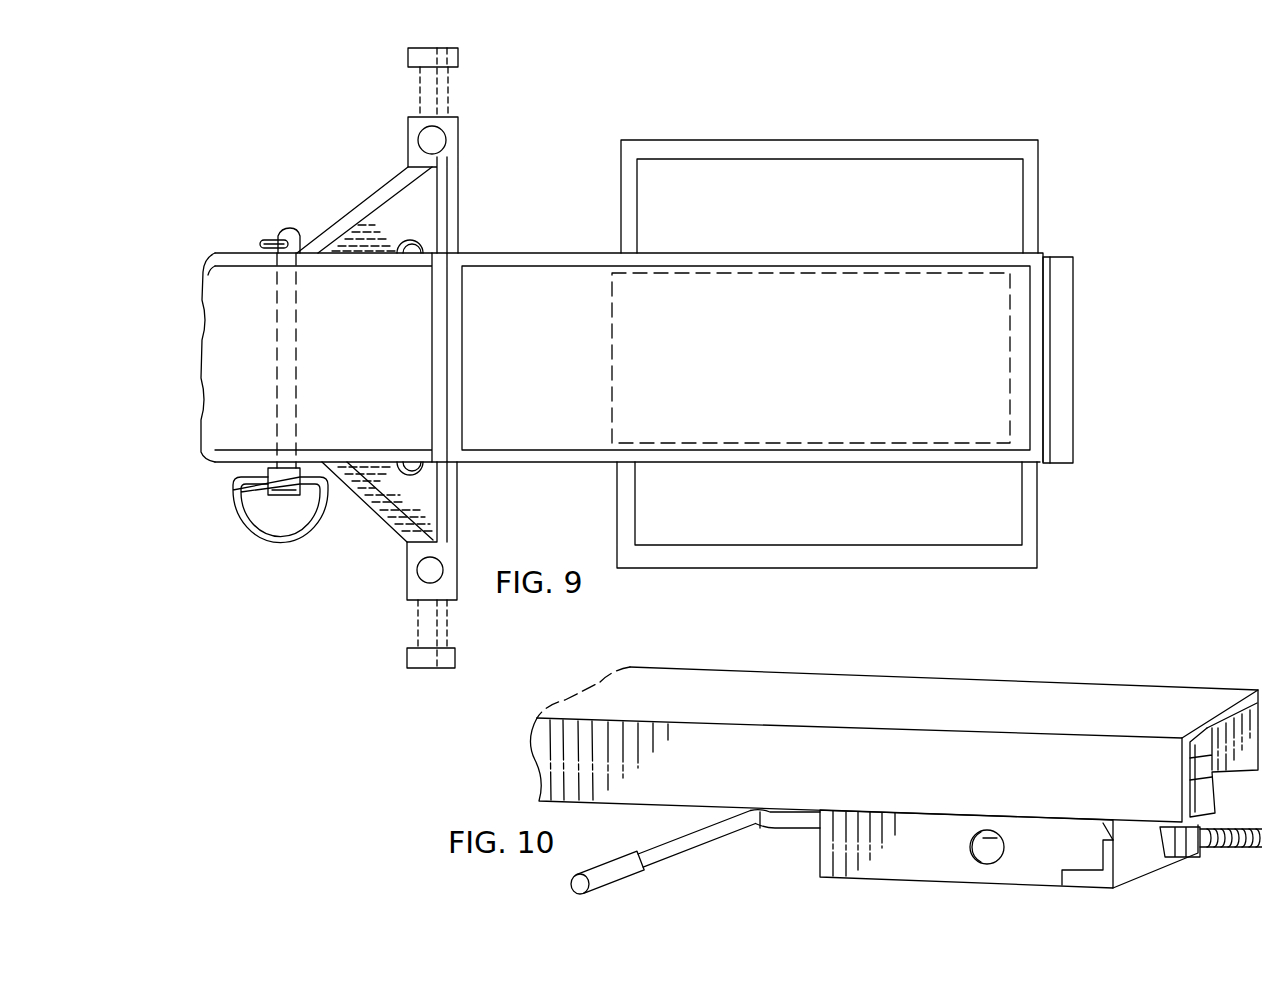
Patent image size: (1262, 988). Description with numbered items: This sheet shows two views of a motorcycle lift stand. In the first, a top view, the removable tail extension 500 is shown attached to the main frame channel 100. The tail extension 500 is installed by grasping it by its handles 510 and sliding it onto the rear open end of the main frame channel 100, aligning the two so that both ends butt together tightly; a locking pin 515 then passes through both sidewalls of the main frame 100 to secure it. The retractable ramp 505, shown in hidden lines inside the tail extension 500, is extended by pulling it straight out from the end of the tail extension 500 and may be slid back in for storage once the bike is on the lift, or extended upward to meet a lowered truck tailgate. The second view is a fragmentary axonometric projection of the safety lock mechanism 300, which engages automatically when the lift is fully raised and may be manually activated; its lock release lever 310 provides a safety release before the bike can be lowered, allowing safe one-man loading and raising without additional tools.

In FIG. 9, the main frame channel 100 is at (247, 287).
In FIG. 10, the main frame channel 100 is at (960, 700).
In FIG. 9, the removable tail extension 500 is at (531, 252).
In FIG. 9, the retractable ramp 505 is at (610, 356).
In FIG. 9, the handles 510 is at (743, 138).
In FIG. 9, the locking pin 515 is at (287, 497).
In FIG. 10, the safety lock mechanism 300 is at (897, 878).
In FIG. 10, the lock release lever 310 is at (643, 878).